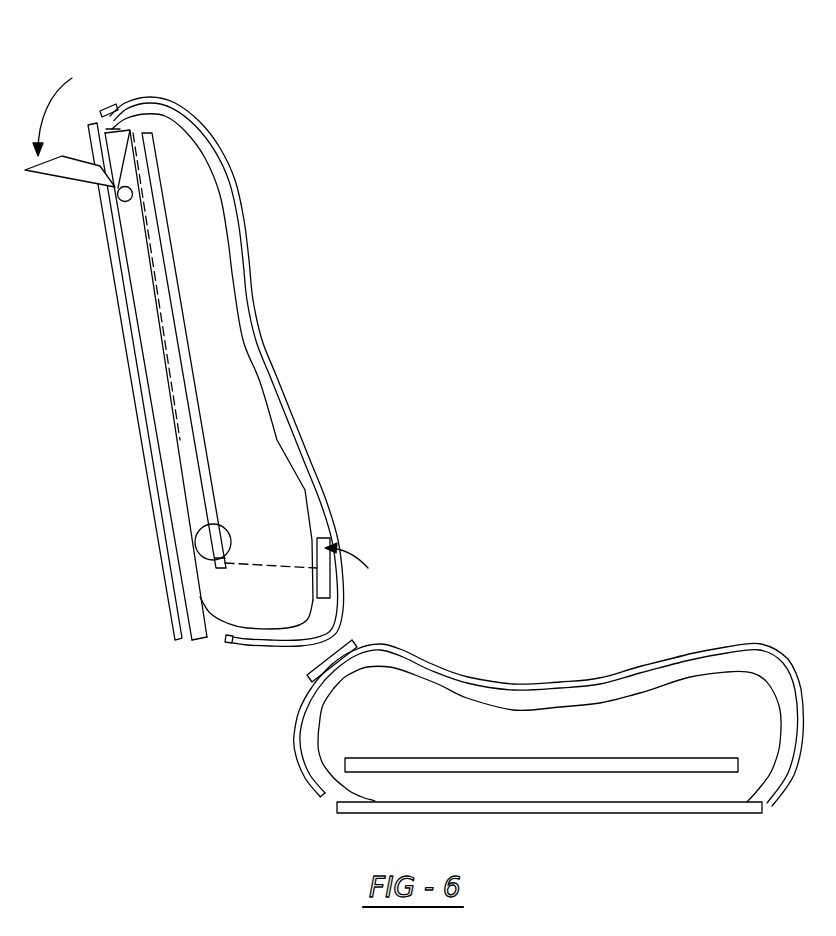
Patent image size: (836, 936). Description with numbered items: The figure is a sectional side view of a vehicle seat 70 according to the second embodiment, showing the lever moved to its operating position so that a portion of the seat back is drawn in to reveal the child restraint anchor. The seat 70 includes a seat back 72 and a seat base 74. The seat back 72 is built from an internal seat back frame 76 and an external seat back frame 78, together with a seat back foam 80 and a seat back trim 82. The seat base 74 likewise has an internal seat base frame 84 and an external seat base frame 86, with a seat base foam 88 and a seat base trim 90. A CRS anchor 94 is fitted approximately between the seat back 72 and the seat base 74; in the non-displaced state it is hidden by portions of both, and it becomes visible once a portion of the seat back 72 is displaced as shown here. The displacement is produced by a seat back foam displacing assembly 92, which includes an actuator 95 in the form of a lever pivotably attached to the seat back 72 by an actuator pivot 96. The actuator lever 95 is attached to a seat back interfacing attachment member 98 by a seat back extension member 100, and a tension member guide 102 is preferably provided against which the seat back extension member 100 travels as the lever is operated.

The seat 70 is at (297, 117).
The seat back 72 is at (225, 227).
The seat base 74 is at (549, 736).
The internal seat back frame 76 is at (190, 377).
The external seat back frame 78 is at (144, 462).
The seat back foam 80 is at (212, 382).
The seat back trim 82 is at (307, 434).
The internal seat base frame 84 is at (472, 765).
The external seat base frame 86 is at (705, 813).
The seat base foam 88 is at (765, 695).
The seat base trim 90 is at (758, 652).
The seat back foam displacing assembly 92 is at (66, 170).
The CRS anchor 94 is at (317, 667).
The actuator 95 is at (110, 128).
The actuator pivot 96 is at (125, 201).
The seat back interfacing attachment member 98 is at (325, 585).
The seat back extension member 100 is at (156, 292).
The tension member guide 102 is at (205, 543).